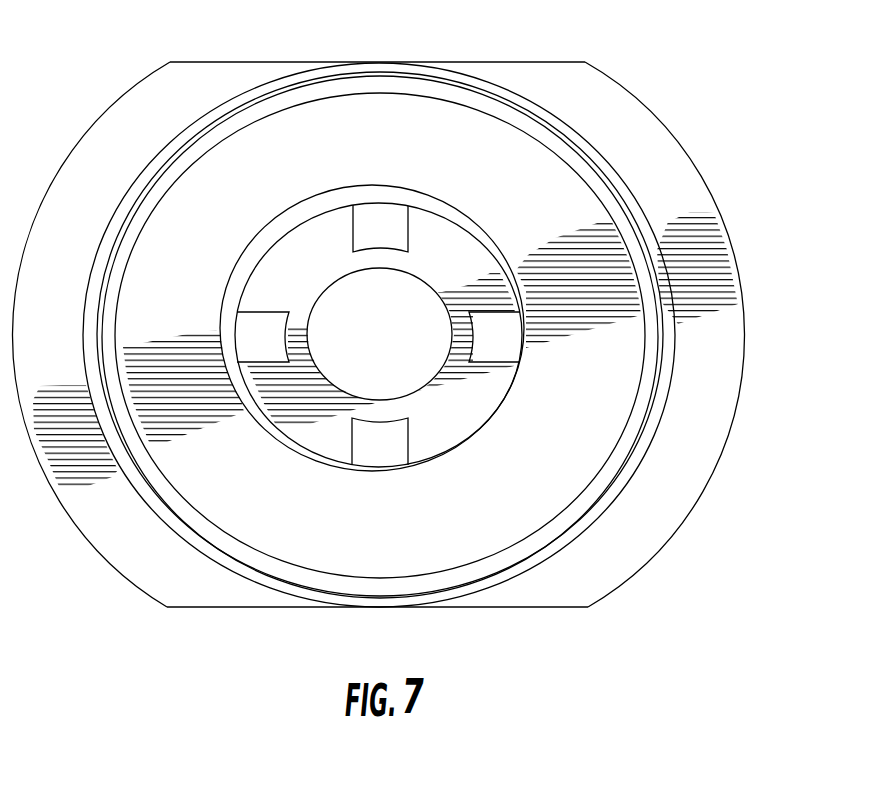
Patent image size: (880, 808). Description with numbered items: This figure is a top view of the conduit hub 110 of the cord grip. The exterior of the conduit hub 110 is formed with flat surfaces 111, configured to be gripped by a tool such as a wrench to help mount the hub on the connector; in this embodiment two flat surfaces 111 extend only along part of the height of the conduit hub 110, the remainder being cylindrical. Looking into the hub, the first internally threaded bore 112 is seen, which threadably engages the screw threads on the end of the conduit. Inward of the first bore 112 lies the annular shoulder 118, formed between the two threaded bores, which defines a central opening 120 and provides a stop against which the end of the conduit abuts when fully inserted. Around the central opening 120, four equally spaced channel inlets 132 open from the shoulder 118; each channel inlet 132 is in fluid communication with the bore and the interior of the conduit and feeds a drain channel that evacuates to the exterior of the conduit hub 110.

The conduit hub 110 is at (688, 146).
The flat surfaces 111 is at (555, 62).
The first internally threaded bore 112 is at (452, 447).
The annular shoulder 118 is at (440, 392).
The central opening 120 is at (330, 381).
The channel inlet 132 is at (489, 313).